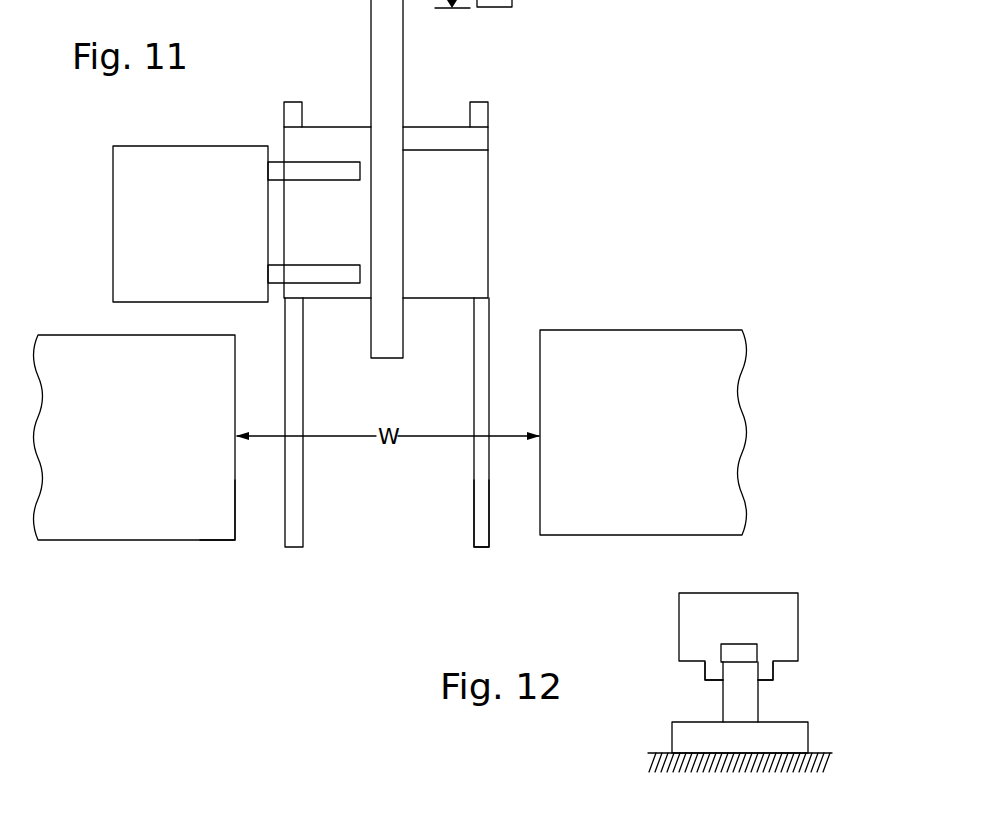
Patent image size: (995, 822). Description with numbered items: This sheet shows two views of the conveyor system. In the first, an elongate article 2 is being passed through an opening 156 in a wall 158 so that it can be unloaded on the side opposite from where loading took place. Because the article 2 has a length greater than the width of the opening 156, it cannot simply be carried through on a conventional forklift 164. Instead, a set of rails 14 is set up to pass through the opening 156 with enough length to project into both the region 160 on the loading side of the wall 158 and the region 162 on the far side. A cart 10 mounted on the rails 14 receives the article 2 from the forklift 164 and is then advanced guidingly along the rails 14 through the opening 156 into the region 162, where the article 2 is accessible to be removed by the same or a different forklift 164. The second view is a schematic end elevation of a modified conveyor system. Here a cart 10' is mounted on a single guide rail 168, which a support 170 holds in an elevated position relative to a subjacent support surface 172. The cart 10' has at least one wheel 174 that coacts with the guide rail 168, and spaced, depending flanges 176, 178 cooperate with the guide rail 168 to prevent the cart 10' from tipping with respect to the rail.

In FIG. 11, the article 2 is at (390, 52).
In FIG. 11, the cart 10 is at (386, 200).
In FIG. 11, the forklift 164 is at (204, 234).
In FIG. 11, the region 162 is at (526, 297).
In FIG. 11, the wall 158 is at (144, 458).
In FIG. 11, the rails 14 is at (474, 531).
In FIG. 11, the region 160 is at (503, 529).
In FIG. 11, the opening 156 is at (237, 512).
In FIG. 12, the cart 10' is at (766, 616).
In FIG. 12, the wheel 174 is at (743, 652).
In FIG. 12, the depending flange 176 is at (765, 670).
In FIG. 12, the depending flange 178 is at (713, 672).
In FIG. 12, the guide rail 168 is at (758, 706).
In FIG. 12, the support 170 is at (672, 738).
In FIG. 12, the subjacent support surface 172 is at (658, 753).